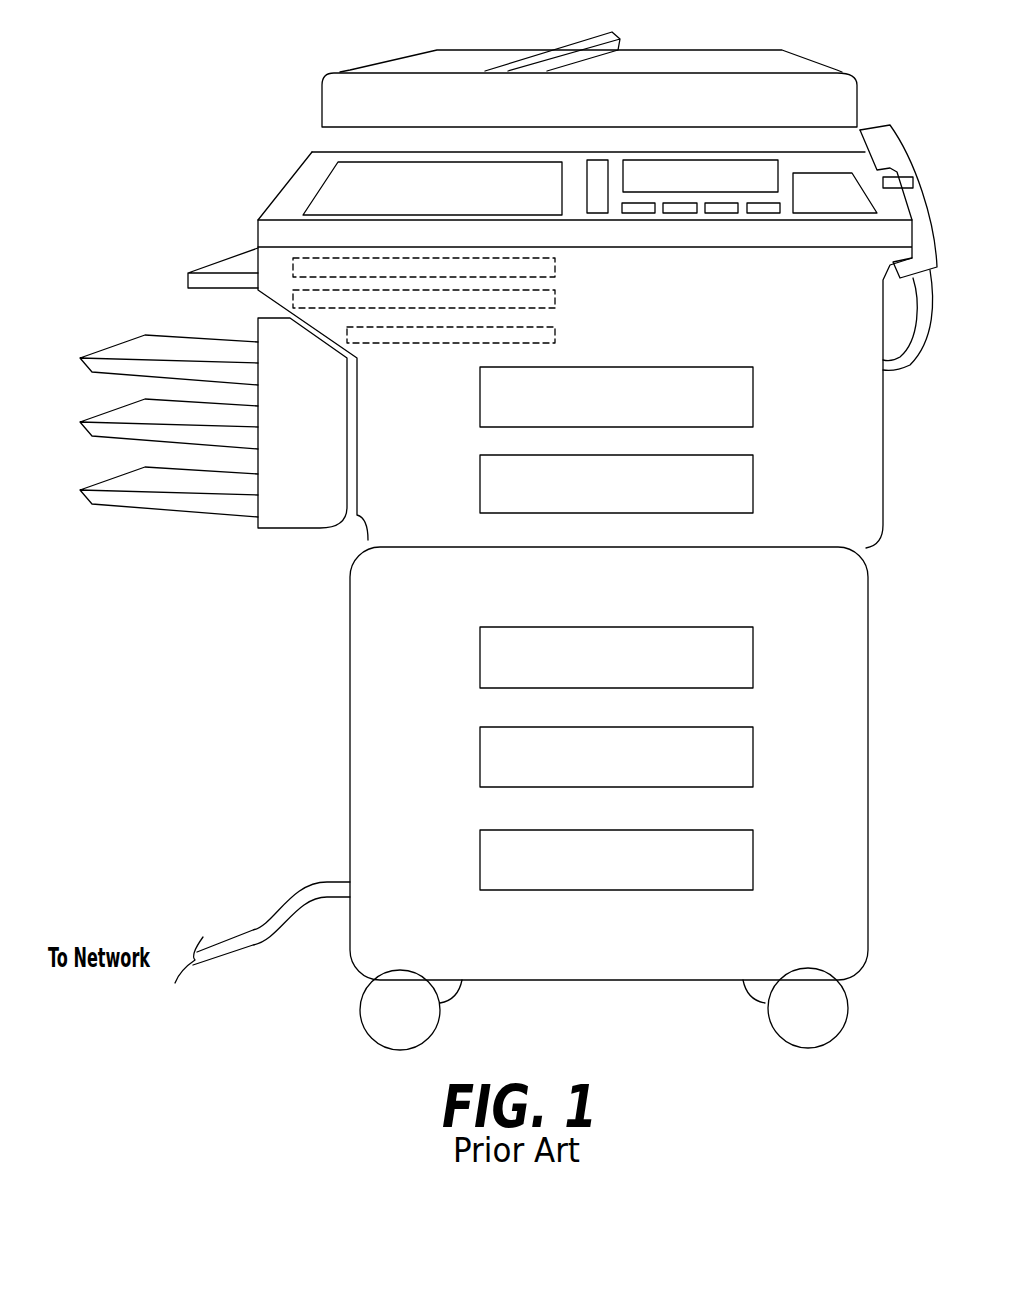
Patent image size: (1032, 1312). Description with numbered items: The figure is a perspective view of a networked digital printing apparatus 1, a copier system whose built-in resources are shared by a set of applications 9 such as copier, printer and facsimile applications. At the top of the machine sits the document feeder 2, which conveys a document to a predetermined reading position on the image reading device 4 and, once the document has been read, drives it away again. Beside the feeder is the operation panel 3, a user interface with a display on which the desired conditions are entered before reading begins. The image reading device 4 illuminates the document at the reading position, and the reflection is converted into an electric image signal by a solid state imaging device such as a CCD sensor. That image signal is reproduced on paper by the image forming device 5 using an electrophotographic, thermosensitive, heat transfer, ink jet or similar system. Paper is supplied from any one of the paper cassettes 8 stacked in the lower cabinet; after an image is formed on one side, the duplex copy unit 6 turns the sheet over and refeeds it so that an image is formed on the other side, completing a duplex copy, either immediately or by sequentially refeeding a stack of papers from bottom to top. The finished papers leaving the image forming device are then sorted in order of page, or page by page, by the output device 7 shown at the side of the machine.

The digital printing apparatus 1 is at (843, 83).
The document feeder 2 is at (340, 168).
The operation panel 3 is at (268, 193).
The image reading device 4 is at (747, 403).
The image forming device 5 is at (745, 487).
The duplex copy unit 6 is at (163, 520).
The output device 7 is at (748, 653).
The paper cassettes 8 is at (562, 297).
The applications 9 is at (237, 948).